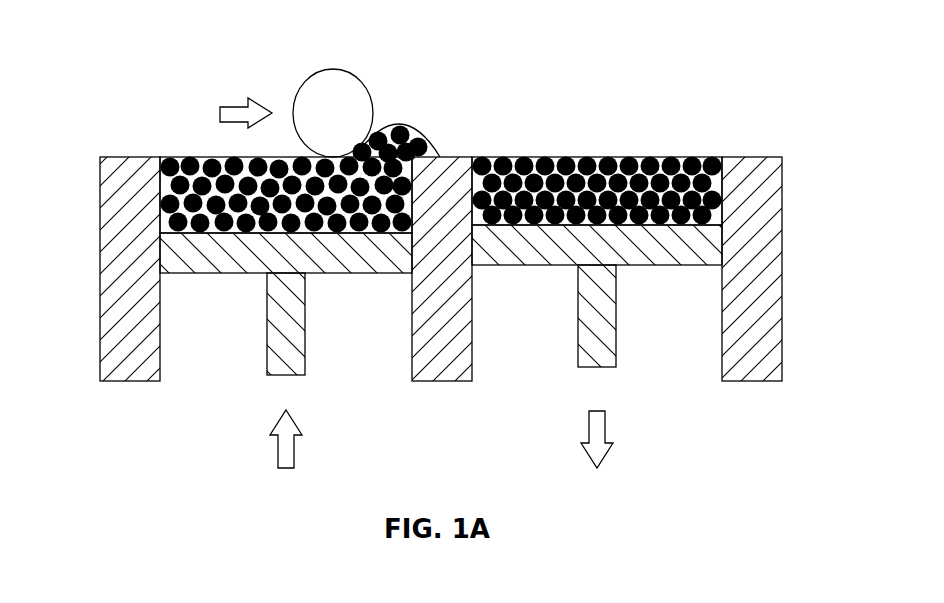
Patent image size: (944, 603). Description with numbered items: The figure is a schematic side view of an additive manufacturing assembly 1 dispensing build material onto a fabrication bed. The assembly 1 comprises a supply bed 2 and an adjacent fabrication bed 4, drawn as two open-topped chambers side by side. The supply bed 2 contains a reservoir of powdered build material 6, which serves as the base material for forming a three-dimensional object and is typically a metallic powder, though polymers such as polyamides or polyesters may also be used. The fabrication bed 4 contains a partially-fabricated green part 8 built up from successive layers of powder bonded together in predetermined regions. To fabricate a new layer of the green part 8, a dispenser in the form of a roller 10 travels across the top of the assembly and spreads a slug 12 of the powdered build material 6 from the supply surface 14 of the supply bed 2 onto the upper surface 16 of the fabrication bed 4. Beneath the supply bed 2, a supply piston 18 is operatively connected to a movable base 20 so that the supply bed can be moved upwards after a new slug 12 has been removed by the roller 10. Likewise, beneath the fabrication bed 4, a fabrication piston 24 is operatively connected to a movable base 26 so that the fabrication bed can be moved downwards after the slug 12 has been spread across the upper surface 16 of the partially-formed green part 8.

The additive manufacturing assembly 1 is at (162, 86).
The supply bed 2 is at (251, 231).
The fabrication bed 4 is at (656, 230).
The powdered build material 6 is at (163, 211).
The partially-fabricated green part 8 is at (722, 200).
The roller 10 is at (325, 90).
The slug 12 is at (385, 135).
The supply surface 14 is at (206, 157).
The upper surface 16 is at (582, 157).
The supply piston 18 is at (278, 352).
The movable base 20 is at (175, 257).
The fabrication piston 24 is at (608, 333).
The movable base 26 is at (708, 250).